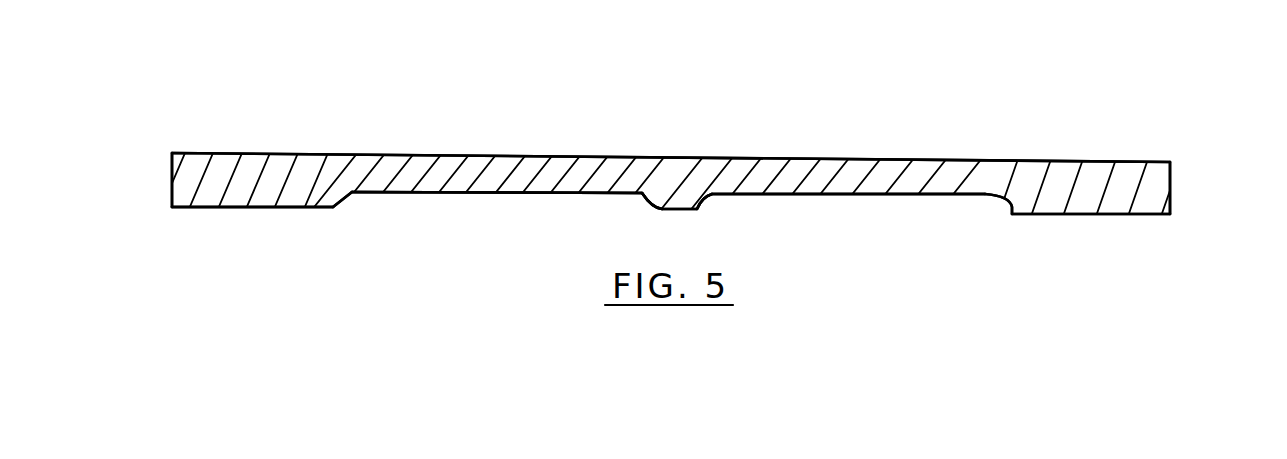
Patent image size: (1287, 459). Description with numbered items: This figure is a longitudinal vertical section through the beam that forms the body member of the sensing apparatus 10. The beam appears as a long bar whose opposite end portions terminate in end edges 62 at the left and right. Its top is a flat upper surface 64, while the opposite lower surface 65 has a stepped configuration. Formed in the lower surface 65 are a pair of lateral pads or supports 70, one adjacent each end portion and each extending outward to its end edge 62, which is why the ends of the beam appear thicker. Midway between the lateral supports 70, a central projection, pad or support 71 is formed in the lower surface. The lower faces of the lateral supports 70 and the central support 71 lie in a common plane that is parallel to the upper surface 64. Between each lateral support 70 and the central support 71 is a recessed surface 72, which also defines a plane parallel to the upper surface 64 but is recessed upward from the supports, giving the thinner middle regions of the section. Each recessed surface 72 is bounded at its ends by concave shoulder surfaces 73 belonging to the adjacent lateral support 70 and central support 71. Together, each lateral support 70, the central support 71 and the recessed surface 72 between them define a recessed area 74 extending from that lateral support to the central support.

The sensing apparatus 10 is at (660, 131).
The end edges 62 is at (170, 190).
The upper surface 64 is at (437, 155).
The lower surface 65 is at (296, 207).
The lateral pads or supports 70 is at (228, 207).
The central projection, pad or support 71 is at (682, 210).
The recessed surface 72 is at (475, 193).
The concave shoulder surfaces 73 is at (340, 198).
The recessed area 74 is at (532, 193).